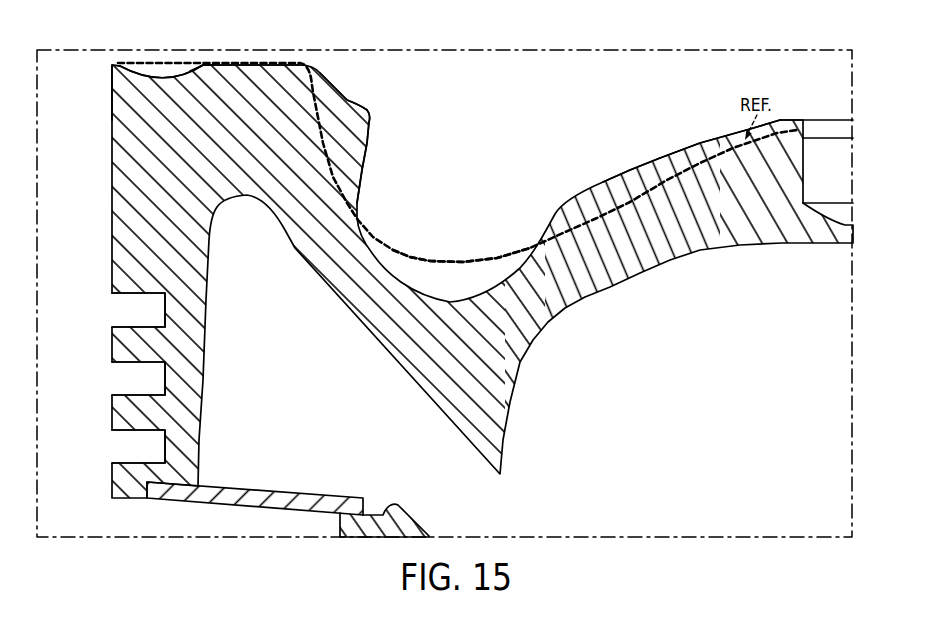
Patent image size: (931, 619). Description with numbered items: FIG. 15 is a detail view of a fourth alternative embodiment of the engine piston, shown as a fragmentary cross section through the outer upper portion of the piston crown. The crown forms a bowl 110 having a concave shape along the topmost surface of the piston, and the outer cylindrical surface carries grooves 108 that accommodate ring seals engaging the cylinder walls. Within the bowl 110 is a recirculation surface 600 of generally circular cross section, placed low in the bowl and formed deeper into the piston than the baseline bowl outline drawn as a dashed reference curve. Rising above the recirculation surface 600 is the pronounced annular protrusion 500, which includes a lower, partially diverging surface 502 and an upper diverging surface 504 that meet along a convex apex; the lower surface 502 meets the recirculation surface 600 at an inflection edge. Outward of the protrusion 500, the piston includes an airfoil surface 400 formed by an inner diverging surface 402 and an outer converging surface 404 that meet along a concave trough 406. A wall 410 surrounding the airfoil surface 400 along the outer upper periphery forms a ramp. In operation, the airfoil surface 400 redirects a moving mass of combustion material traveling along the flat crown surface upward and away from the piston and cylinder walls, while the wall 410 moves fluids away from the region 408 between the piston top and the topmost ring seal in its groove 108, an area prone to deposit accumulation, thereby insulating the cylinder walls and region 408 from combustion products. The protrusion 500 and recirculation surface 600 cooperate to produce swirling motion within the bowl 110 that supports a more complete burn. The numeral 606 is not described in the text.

The grooves 108 is at (129, 308).
The bowl 110 is at (507, 122).
The airfoil surface 400 is at (176, 56).
The inner diverging surface 402 is at (196, 65).
The outer converging surface 404 is at (142, 78).
The concave trough 406 is at (130, 72).
The region 408 is at (105, 65).
The wall 410 is at (127, 64).
The pronounced annular protrusion 500 is at (363, 120).
The lower, partially diverging surface 502 is at (366, 146).
The upper diverging surface 504 is at (350, 104).
The recirculation surface 600 is at (497, 287).
The sealing surface 606 is at (670, 153).